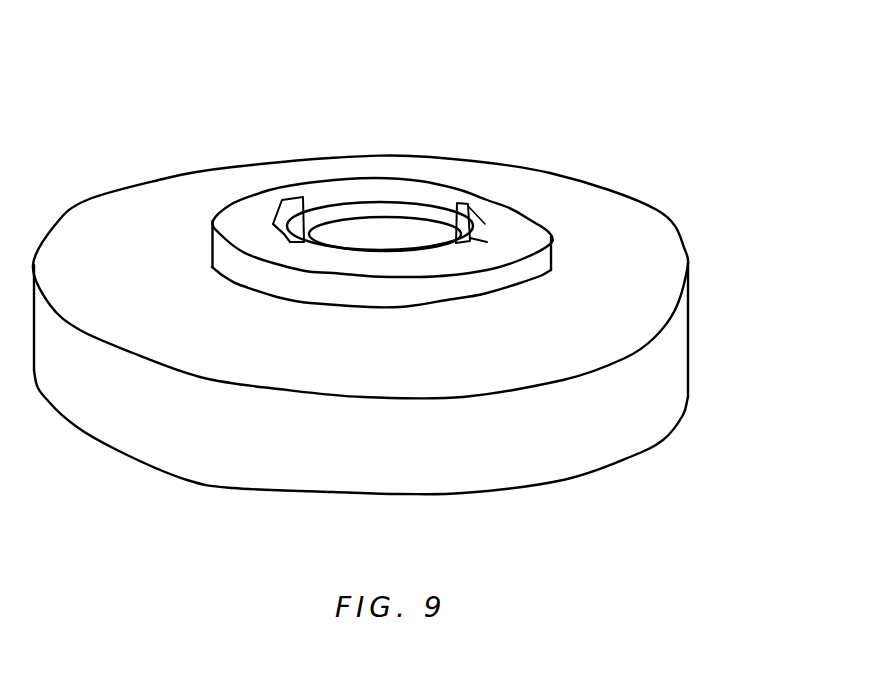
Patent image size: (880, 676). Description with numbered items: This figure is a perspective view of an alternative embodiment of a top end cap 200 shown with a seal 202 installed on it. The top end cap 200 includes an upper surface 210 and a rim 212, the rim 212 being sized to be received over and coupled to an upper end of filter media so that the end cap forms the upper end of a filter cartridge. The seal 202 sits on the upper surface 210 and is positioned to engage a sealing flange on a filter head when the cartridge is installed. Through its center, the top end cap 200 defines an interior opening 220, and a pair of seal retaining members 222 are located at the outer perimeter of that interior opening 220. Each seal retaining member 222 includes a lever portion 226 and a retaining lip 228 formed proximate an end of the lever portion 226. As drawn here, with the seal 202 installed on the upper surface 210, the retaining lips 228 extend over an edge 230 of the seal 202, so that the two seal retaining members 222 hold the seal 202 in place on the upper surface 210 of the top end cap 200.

The top end cap 200 is at (416, 254).
The seal 202 is at (552, 246).
The upper surface 210 is at (630, 315).
The rim 212 is at (684, 378).
The interior opening 220 is at (363, 251).
The seal retaining members 222 is at (293, 202).
The lever portion 226 is at (457, 223).
The retaining lip 228 is at (283, 233).
The edge 230 is at (347, 203).